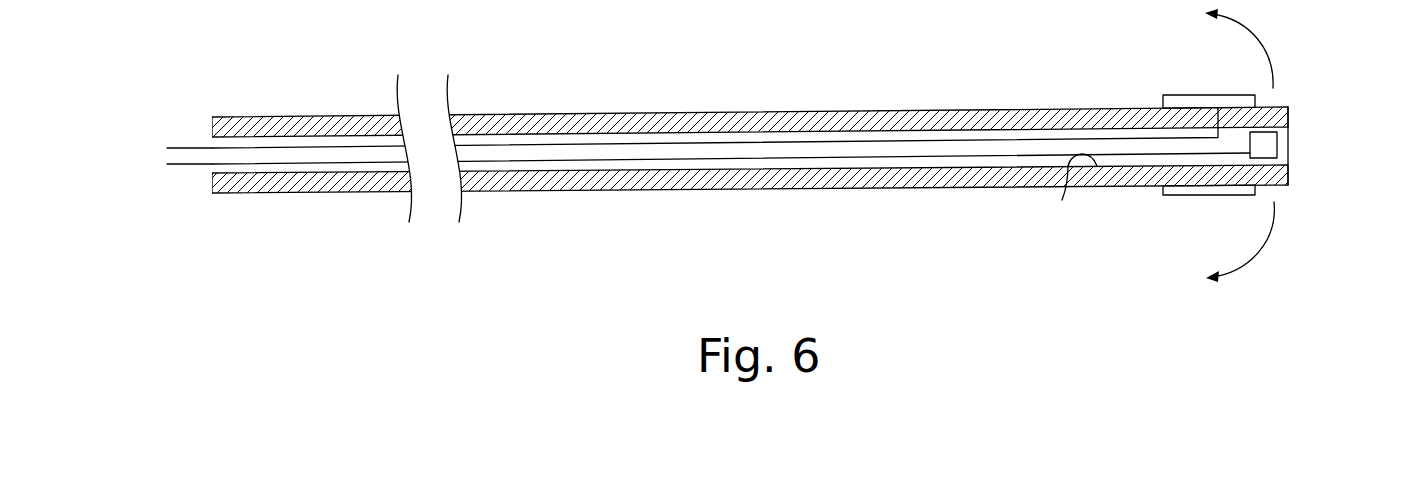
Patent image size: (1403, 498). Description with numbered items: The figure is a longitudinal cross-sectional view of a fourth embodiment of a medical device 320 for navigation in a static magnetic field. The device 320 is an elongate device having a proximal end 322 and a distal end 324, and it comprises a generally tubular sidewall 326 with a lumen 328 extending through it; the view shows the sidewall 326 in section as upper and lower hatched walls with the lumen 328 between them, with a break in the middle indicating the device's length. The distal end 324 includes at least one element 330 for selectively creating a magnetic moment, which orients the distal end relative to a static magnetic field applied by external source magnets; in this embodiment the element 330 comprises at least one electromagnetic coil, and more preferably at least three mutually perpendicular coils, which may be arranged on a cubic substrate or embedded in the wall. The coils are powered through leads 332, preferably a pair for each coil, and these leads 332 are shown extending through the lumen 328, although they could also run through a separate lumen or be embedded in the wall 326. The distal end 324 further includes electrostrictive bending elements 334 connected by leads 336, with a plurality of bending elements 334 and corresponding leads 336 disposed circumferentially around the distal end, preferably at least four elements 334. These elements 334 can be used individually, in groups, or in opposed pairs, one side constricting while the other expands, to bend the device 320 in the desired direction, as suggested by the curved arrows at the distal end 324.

The medical device 320 is at (782, 262).
The proximal end 322 is at (191, 197).
The distal end 324 is at (1312, 130).
The tubular sidewall 326 is at (763, 112).
The lumen 328 is at (888, 166).
The element for selectively creating a magnetic moment 330 is at (1272, 148).
The leads 332 is at (866, 157).
The electrostrictive bending elements 334 is at (1185, 95).
The leads 336 is at (1063, 140).